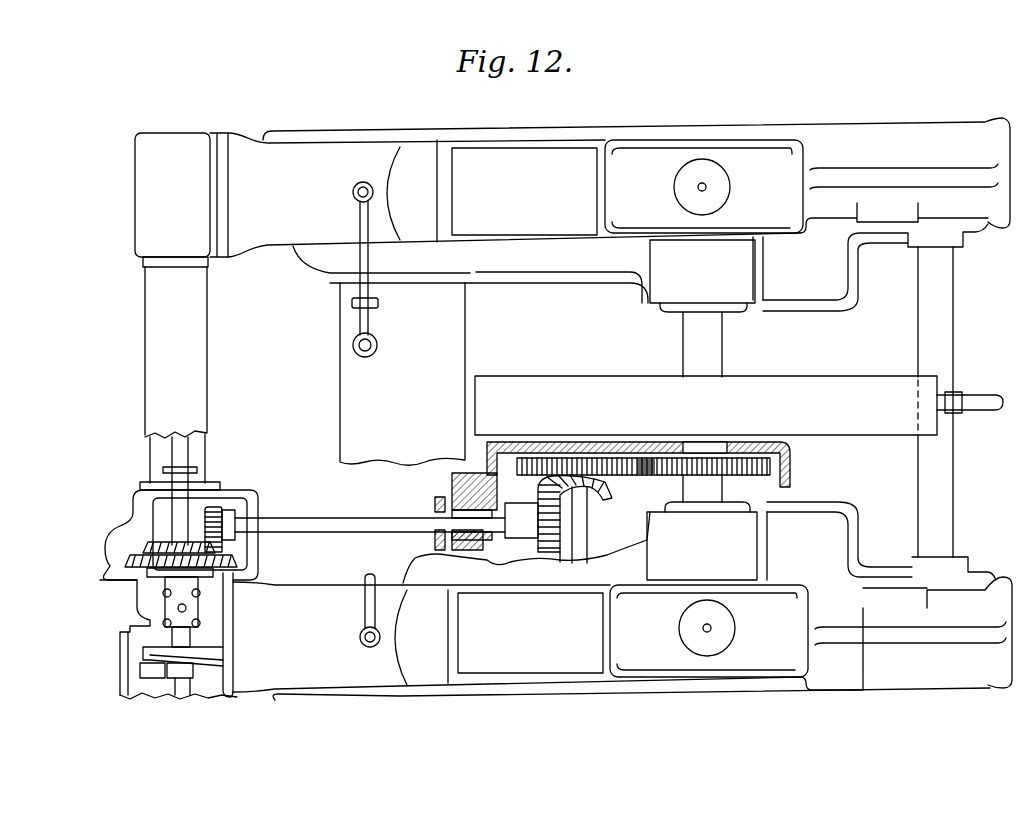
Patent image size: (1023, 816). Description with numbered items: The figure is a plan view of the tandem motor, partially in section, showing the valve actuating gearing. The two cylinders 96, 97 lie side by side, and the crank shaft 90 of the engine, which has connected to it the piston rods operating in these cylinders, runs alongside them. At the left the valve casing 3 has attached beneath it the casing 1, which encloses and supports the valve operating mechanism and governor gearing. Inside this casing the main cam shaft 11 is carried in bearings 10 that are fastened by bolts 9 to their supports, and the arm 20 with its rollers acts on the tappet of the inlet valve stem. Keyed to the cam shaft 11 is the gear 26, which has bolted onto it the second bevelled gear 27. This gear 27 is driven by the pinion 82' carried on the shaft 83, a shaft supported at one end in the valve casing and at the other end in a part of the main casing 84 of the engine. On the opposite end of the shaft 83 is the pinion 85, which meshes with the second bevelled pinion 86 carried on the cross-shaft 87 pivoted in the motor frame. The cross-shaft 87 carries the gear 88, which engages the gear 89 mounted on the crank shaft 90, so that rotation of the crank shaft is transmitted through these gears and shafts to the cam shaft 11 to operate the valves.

The casing 1 is at (143, 240).
The cylinder 97 is at (364, 168).
The main cam shaft 11 is at (180, 517).
The second bevelled gear 27 is at (150, 545).
The gear 26 is at (127, 565).
The pinion 82' is at (232, 506).
The shaft 83 is at (305, 528).
The main casing 84 is at (450, 488).
The gear 88 is at (634, 468).
The gear 89 is at (674, 466).
The crank shaft 90 is at (720, 488).
The second bevelled pinion 86 is at (604, 500).
The cross-shaft 87 is at (585, 536).
The pinion 85 is at (550, 552).
The bearings 10 is at (195, 603).
The bolts 9 is at (197, 622).
The valve casing 3 is at (140, 697).
The arm 20 is at (212, 667).
The cylinder 96 is at (364, 663).